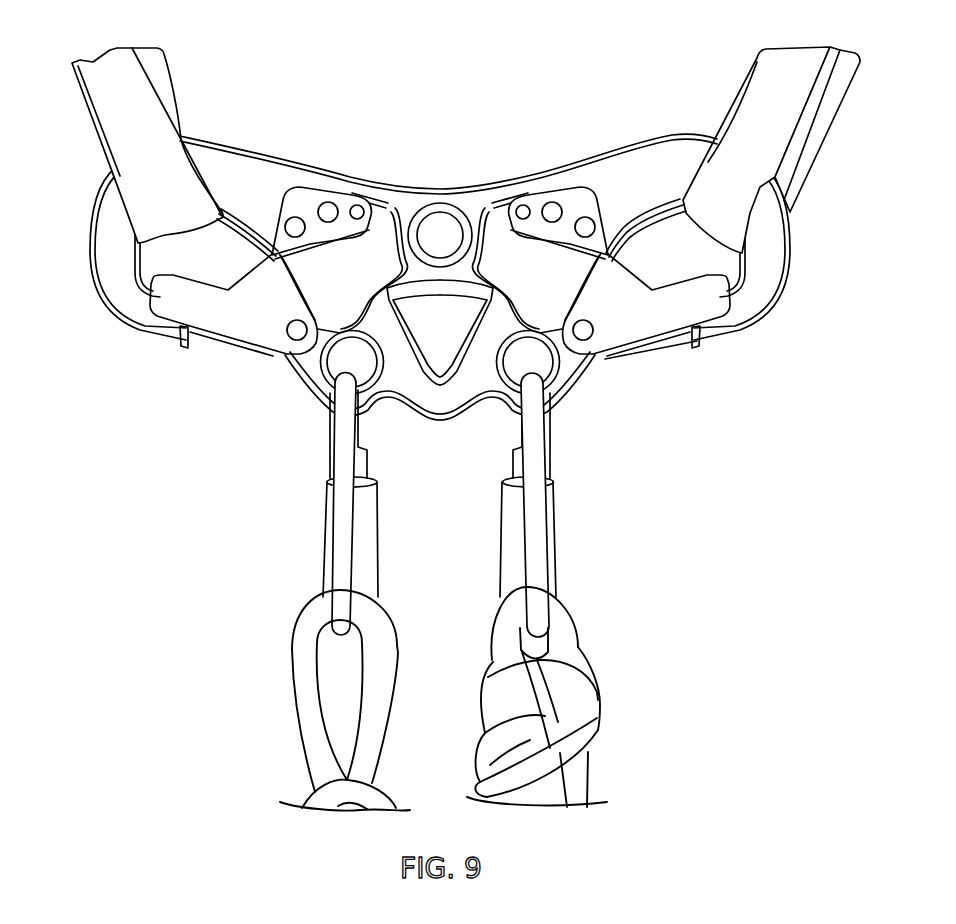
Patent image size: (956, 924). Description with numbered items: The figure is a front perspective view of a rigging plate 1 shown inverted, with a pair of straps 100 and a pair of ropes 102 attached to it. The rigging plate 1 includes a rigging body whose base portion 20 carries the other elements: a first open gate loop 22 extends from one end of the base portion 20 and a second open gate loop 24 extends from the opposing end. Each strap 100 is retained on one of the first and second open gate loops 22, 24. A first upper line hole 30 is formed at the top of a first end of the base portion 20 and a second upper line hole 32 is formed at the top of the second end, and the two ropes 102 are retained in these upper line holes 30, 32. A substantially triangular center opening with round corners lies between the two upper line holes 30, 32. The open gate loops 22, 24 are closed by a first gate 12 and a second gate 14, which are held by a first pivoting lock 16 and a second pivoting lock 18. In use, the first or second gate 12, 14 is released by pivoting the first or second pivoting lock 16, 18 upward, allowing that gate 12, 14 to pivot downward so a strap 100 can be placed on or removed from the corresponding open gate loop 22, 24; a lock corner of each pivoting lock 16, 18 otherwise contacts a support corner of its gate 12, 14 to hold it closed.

The rigging plate 1 is at (453, 418).
The first gate 12 is at (239, 324).
The second gate 14 is at (633, 325).
The first pivoting lock 16 is at (310, 197).
The second pivoting lock 18 is at (578, 197).
The base portion 20 is at (270, 148).
The first open gate loop 22 is at (103, 313).
The second open gate loop 24 is at (777, 317).
The first upper line hole 30 is at (312, 398).
The second upper line hole 32 is at (570, 397).
The strap 100 is at (78, 113).
The rope 102 is at (302, 694).